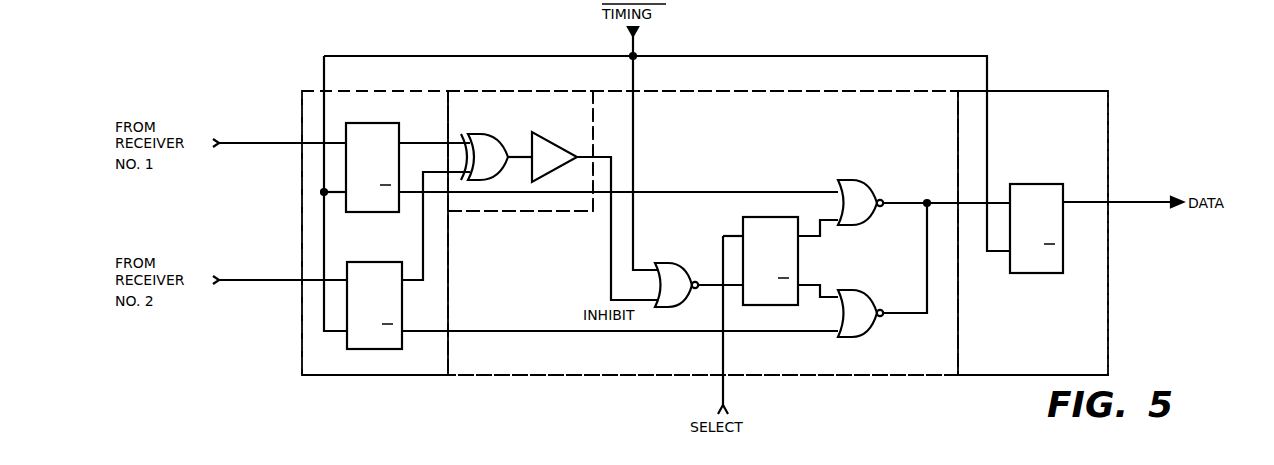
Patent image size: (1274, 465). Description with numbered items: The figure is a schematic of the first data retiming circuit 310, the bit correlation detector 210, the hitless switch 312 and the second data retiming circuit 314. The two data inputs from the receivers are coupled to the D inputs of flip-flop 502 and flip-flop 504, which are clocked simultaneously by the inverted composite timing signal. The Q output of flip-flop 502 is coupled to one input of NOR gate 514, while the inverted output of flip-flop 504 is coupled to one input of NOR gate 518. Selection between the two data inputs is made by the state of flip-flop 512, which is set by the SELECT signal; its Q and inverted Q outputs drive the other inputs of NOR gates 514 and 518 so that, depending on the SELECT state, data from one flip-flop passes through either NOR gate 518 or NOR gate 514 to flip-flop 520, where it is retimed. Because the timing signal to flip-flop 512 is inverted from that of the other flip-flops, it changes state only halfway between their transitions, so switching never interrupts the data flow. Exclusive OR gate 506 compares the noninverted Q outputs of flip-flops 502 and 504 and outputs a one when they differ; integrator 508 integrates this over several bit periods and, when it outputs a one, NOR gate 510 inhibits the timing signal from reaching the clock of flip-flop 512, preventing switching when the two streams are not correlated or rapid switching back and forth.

The bit correlation detector 210 is at (555, 91).
The data retiming circuit 310 is at (425, 380).
The hitless switch 312 is at (594, 380).
The data retiming circuit No. 2 314 is at (1110, 305).
The flip-flop 502 is at (410, 114).
The flip-flop 504 is at (398, 261).
The exclusive OR gate 506 is at (503, 118).
The integrator 508 is at (565, 140).
The NOR gate 510 is at (687, 250).
The flip-flop 512 is at (783, 217).
The NOR gate 514 is at (875, 164).
The NOR gate 518 is at (853, 291).
The flip-flop 520 is at (1047, 183).